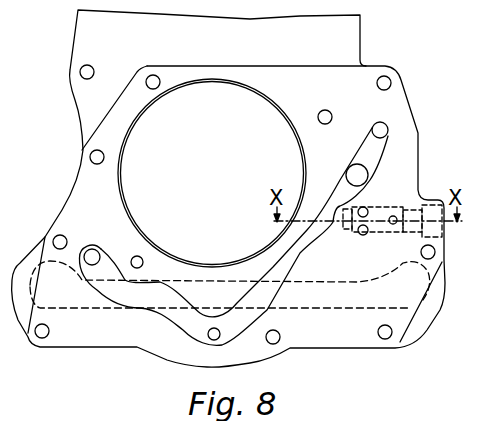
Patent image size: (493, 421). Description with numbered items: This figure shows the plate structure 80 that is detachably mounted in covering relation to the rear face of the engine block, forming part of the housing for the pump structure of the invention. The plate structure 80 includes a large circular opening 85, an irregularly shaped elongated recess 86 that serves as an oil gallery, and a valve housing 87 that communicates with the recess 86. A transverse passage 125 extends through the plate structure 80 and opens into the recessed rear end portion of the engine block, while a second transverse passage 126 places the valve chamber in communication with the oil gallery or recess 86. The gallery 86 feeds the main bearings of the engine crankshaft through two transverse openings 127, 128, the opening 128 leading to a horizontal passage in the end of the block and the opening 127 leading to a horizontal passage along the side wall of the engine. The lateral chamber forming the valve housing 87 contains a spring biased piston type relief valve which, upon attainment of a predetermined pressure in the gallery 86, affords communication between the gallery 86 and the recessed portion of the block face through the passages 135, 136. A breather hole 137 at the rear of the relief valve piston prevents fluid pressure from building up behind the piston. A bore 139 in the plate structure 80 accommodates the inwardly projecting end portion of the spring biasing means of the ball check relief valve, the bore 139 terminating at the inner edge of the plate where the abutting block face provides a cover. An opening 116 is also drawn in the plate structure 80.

The plate structure 80 is at (408, 105).
The circular opening 85 is at (269, 115).
The irregularly shaped elongated recess 86 is at (279, 301).
The valve housing 87 is at (370, 211).
The bolt hole 116 is at (143, 258).
The transverse passage 125 is at (332, 114).
The second transverse passage 126 is at (387, 137).
The transverse opening 127 is at (91, 249).
The transverse opening 128 is at (219, 331).
The passage 135 is at (364, 206).
The passage 136 is at (361, 236).
The breather hole 137 is at (392, 226).
The bore 139 is at (347, 172).